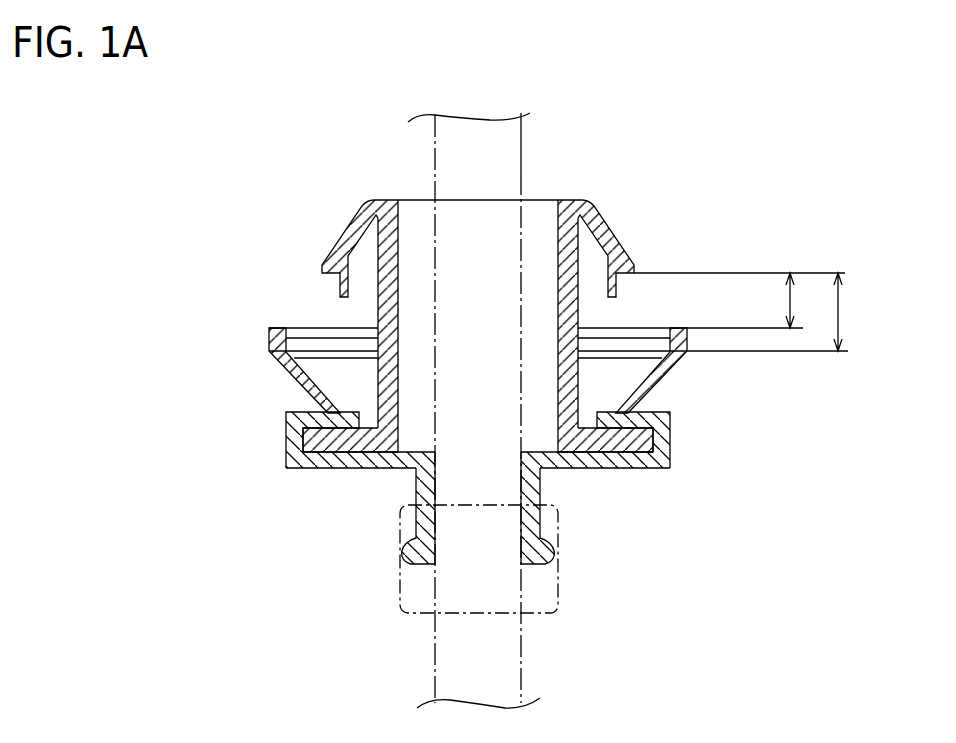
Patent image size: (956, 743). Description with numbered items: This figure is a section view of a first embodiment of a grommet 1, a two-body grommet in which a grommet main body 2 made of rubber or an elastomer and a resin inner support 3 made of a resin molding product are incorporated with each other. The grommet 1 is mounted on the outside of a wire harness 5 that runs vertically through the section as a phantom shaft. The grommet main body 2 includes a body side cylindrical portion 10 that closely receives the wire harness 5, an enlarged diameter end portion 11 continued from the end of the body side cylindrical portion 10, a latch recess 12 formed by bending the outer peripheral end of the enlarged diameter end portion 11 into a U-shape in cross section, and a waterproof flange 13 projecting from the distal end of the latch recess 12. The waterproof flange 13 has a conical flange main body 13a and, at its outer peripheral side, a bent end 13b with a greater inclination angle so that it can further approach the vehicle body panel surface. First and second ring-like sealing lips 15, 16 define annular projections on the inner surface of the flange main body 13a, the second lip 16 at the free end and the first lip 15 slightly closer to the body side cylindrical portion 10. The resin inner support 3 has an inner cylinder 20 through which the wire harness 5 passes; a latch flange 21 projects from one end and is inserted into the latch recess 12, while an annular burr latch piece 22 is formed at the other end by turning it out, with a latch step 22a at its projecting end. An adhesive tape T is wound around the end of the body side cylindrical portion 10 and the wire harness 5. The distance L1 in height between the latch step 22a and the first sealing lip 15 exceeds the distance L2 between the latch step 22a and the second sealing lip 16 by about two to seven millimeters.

The grommet 1 is at (605, 144).
The grommet main body 2 is at (438, 493).
The resin inner support 3 is at (439, 310).
The wire harness 5 is at (435, 153).
The body side cylindrical portion 10 is at (540, 483).
The enlarged diameter end portion 11 is at (323, 468).
The latch recess 12 is at (286, 432).
The waterproof flange 13 is at (264, 370).
The flange main body 13a is at (293, 378).
The bent end 13b is at (268, 335).
The first ring-like sealing lip 15 is at (297, 340).
The second ring-like sealing lip 16 is at (286, 328).
The inner cylinder 20 is at (578, 313).
The latch flange 21 is at (637, 438).
The burr latch piece 22 is at (642, 229).
The latch step 22a is at (630, 272).
The adhesive tape T is at (562, 578).
The distance in height between latch step and first sealing lip L1 is at (777, 312).
The distance in height between latch step and second sealing lip L2 is at (739, 300).